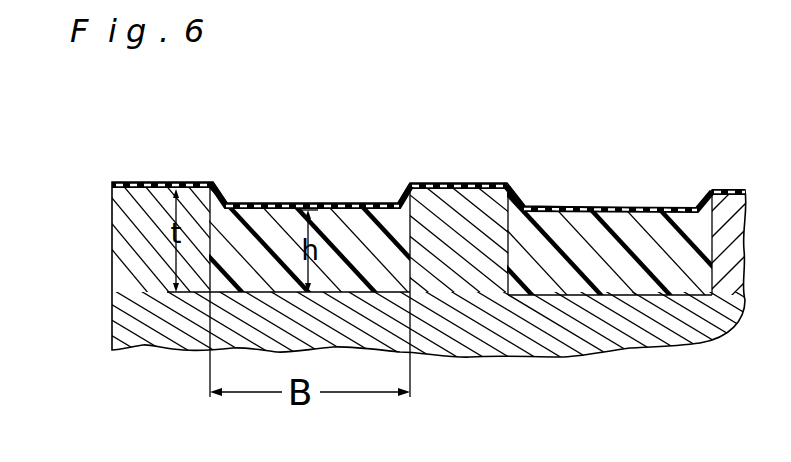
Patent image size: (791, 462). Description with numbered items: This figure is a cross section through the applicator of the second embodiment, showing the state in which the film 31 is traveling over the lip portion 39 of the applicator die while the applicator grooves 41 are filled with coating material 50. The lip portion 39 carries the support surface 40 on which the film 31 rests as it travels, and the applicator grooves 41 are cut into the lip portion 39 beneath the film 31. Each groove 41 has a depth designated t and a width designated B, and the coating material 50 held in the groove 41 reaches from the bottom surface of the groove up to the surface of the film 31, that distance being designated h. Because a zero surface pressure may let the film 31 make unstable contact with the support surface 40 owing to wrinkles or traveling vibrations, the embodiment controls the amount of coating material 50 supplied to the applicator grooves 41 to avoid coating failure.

The lip portion 39 is at (110, 238).
The film 31 is at (163, 183).
The support surface 40 is at (463, 183).
The applicator groove 41 is at (247, 288).
The coating material 50 is at (342, 238).